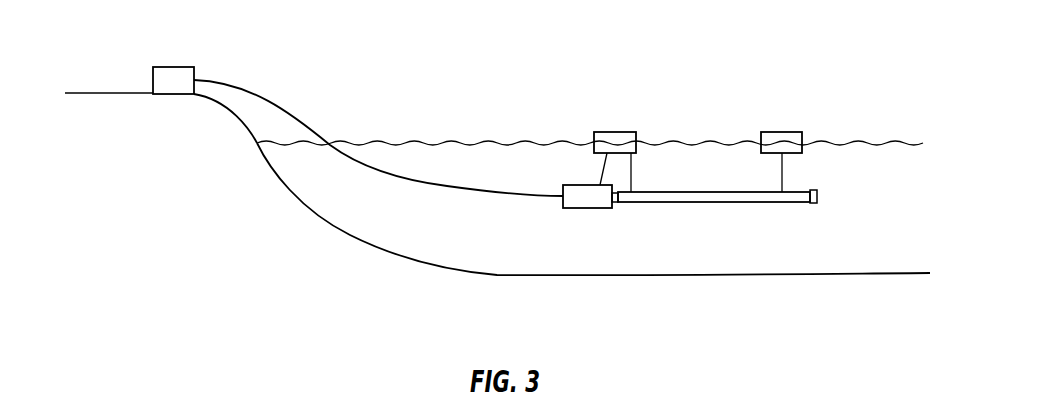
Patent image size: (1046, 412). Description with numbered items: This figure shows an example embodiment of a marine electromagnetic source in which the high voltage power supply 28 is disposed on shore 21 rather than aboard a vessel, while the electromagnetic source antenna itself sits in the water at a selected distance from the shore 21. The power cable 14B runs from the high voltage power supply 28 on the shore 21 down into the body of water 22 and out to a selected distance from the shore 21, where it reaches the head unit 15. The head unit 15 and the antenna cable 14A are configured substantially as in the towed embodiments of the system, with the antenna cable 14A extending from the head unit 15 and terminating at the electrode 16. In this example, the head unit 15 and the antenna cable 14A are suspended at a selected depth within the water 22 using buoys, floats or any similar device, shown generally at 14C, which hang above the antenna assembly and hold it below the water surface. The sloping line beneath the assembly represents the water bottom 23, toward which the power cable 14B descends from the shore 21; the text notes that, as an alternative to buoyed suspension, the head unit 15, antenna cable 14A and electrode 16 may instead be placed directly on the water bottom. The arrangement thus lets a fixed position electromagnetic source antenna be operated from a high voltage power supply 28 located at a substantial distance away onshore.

The high voltage power supply 28 is at (173, 67).
The shore 21 is at (193, 95).
The seabed 23 is at (558, 277).
The power cable 14B is at (449, 186).
The body of water 22 is at (884, 218).
The head unit 15 is at (586, 208).
The antenna cable 14A is at (718, 203).
The electrode 16 is at (808, 196).
The buoys 14C is at (615, 132).